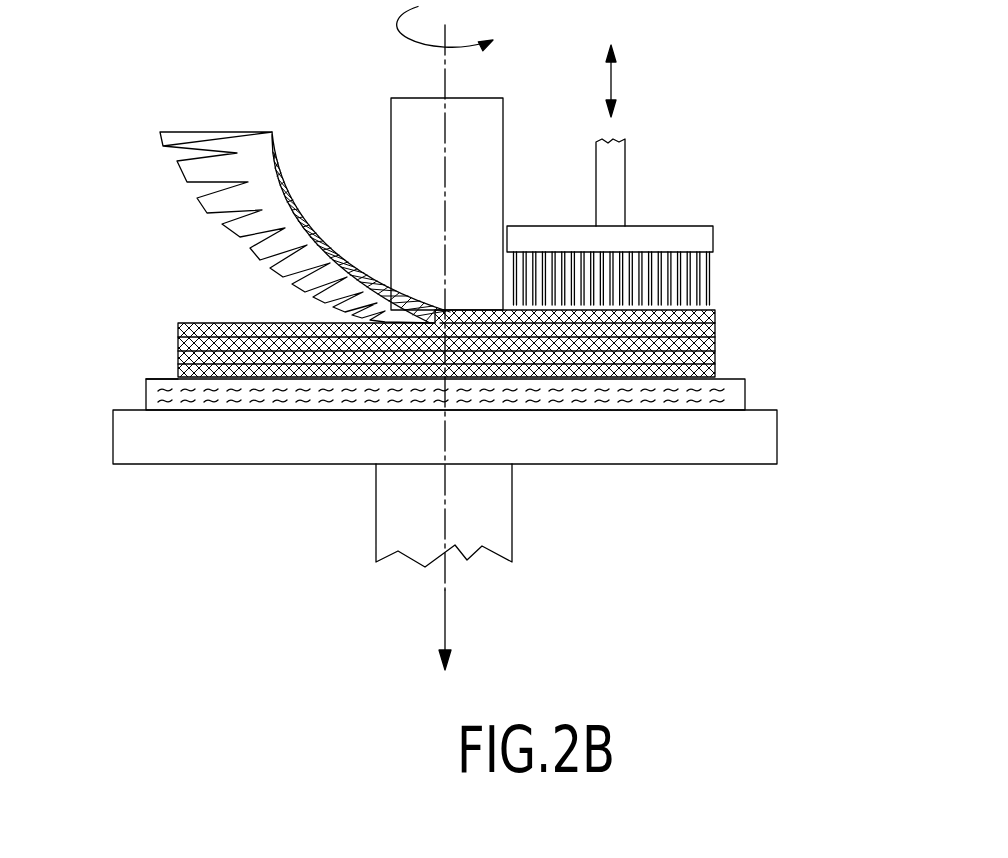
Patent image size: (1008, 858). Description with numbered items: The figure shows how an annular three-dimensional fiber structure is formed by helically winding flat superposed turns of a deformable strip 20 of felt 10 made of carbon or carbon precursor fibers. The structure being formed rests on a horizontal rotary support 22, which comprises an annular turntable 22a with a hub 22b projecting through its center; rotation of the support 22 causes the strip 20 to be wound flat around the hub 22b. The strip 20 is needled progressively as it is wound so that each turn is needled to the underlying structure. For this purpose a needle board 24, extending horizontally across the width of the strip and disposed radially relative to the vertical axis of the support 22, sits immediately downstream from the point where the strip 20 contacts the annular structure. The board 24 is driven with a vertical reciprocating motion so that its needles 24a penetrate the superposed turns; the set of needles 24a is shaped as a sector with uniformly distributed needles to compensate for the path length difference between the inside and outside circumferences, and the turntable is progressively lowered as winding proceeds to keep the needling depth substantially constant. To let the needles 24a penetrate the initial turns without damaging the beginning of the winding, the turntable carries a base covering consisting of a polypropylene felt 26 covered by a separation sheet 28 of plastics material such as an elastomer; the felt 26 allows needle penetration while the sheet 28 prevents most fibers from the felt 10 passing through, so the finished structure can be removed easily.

The felt 10 is at (238, 323).
The strip 20 is at (204, 211).
The rotary support 22 is at (500, 519).
The annular turntable 22a is at (773, 445).
The hub 22b is at (418, 128).
The needle board 24 is at (662, 235).
The needles 24a is at (690, 285).
The polypropylene felt 26 is at (146, 397).
The separation sheet 28 is at (162, 377).